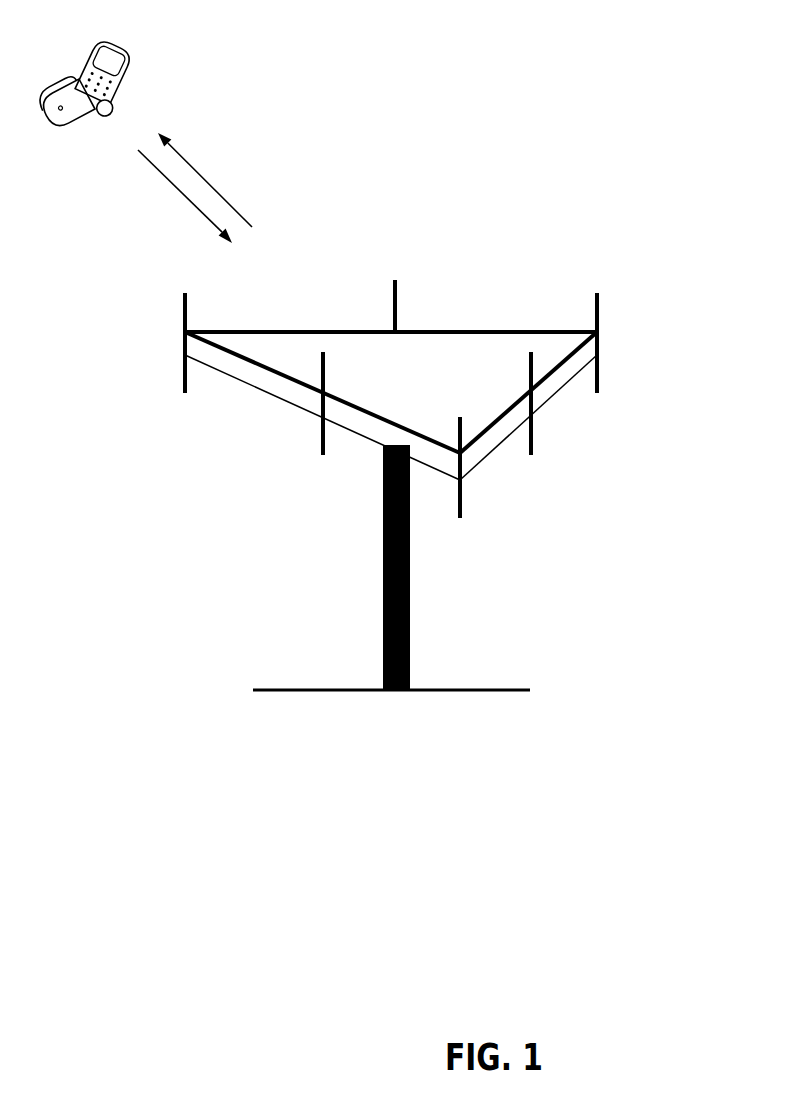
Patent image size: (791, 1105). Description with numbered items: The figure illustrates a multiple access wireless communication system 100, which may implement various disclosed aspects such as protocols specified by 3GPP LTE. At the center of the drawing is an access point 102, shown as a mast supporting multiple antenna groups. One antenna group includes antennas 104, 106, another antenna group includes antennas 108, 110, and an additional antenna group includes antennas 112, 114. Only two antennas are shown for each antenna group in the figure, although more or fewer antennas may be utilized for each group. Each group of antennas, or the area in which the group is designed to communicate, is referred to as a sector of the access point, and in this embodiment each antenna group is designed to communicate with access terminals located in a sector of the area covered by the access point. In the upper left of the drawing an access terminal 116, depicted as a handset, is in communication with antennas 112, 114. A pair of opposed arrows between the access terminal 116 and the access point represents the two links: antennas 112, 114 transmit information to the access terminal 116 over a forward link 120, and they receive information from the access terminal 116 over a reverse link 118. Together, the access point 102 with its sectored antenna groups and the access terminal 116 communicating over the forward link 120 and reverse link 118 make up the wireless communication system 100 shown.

The wireless communication system 100 is at (568, 82).
The access point 102 is at (410, 693).
The antenna 104 is at (597, 293).
The antenna 106 is at (532, 430).
The antenna 108 is at (461, 495).
The antenna 110 is at (323, 455).
The antenna 112 is at (185, 293).
The antenna 114 is at (395, 293).
The access terminal 116 is at (107, 37).
The reverse link 118 is at (207, 180).
The forward link 120 is at (193, 212).